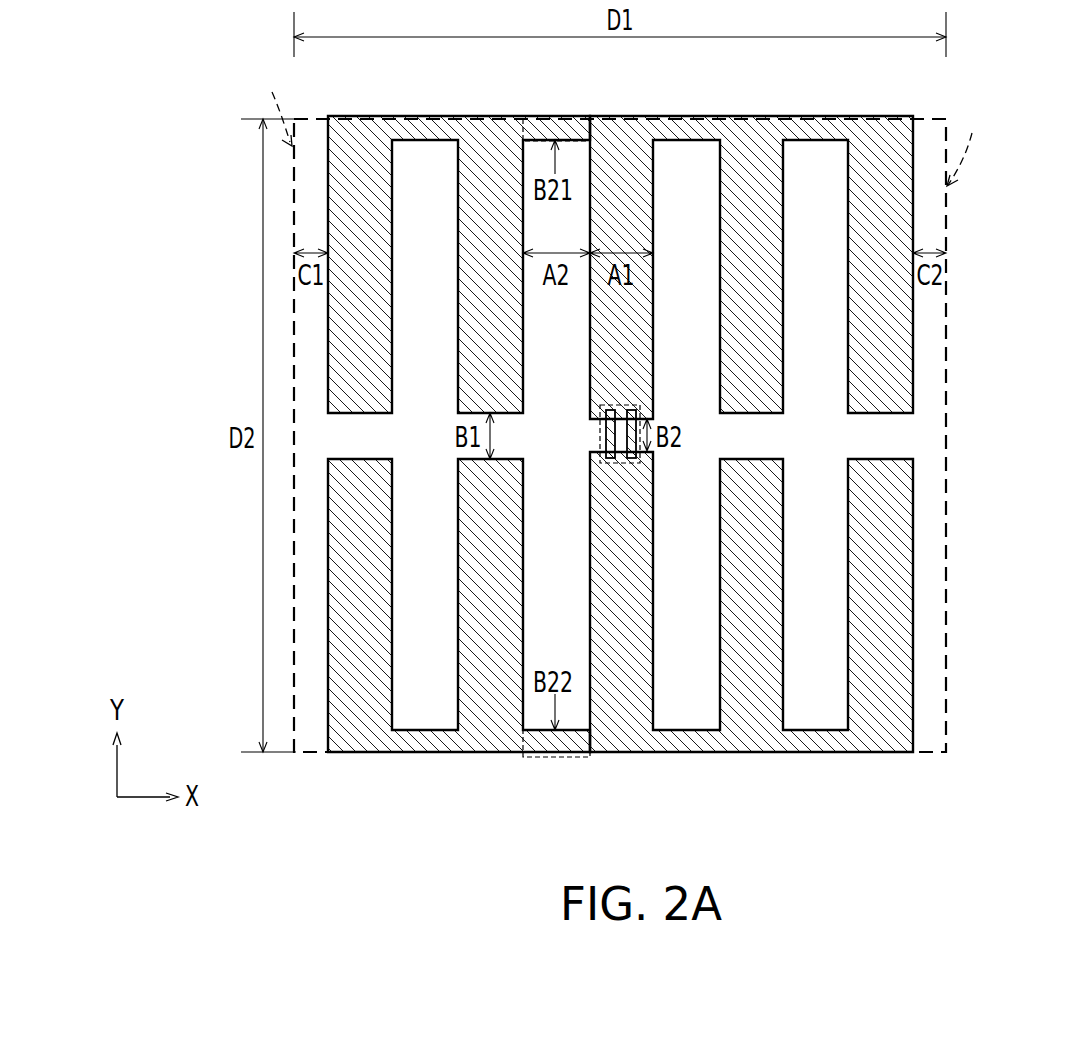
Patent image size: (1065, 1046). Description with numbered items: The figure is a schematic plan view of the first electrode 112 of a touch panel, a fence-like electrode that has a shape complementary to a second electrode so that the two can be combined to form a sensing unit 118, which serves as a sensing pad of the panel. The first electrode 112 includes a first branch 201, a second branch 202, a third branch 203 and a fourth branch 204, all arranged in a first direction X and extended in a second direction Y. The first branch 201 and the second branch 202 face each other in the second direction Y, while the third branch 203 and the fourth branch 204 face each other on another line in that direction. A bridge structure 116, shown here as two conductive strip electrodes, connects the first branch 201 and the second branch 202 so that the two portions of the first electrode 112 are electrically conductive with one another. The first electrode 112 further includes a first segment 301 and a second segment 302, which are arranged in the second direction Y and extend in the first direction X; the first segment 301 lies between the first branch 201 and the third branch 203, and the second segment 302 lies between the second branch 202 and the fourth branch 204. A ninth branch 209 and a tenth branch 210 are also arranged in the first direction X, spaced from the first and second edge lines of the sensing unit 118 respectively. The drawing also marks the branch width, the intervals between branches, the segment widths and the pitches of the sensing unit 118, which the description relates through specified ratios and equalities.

The first electrode 112 is at (654, 439).
The bridge structure 116 is at (600, 436).
The sensing unit 118 is at (946, 445).
The first branch 201 is at (751, 238).
The second branch 202 is at (625, 690).
The third branch 203 is at (459, 235).
The fourth branch 204 is at (490, 690).
The ninth branch 209 is at (360, 178).
The tenth branch 210 is at (881, 178).
The first segment 301 is at (559, 106).
The second segment 302 is at (555, 752).